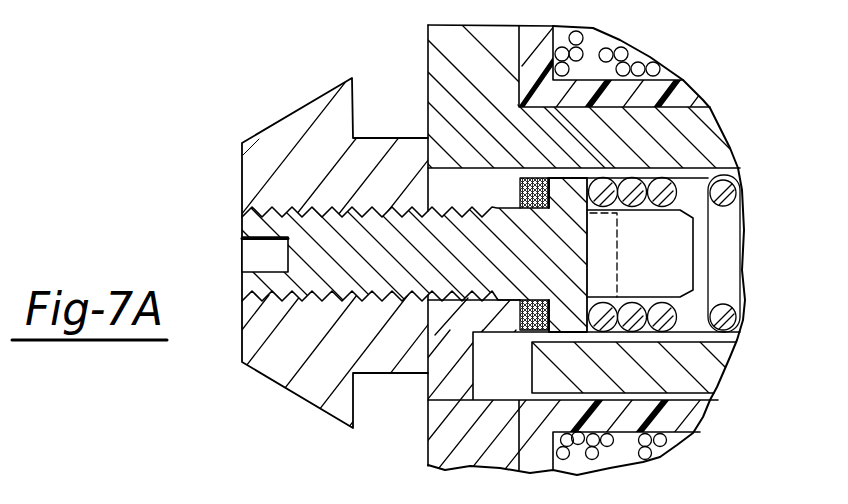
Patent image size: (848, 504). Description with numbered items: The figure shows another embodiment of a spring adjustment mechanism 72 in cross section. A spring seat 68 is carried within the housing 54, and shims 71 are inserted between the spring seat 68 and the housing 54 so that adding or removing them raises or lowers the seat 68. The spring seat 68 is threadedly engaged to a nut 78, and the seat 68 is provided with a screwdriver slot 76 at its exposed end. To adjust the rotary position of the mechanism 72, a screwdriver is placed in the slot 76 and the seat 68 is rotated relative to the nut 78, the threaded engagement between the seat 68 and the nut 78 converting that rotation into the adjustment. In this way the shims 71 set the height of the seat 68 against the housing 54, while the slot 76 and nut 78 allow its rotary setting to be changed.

The housing 54 is at (453, 386).
The spring seat 68 is at (572, 254).
The shims 71 is at (628, 400).
The spring adjustment mechanism 72 is at (395, 112).
The screwdriver slot 76 is at (253, 258).
The nut 78 is at (310, 382).